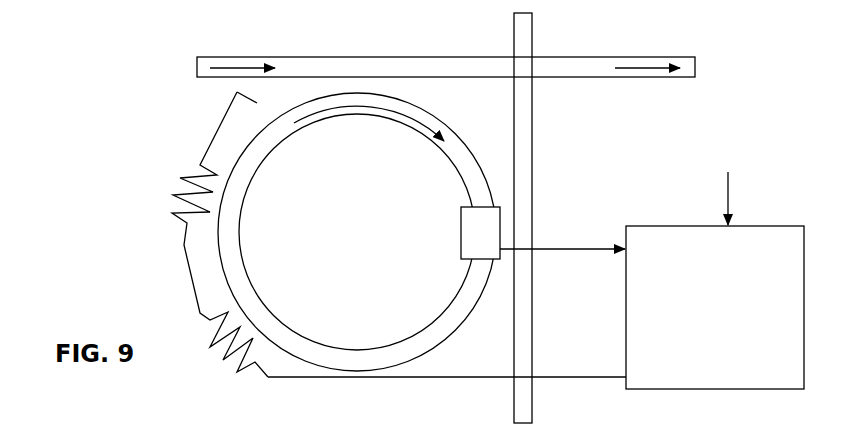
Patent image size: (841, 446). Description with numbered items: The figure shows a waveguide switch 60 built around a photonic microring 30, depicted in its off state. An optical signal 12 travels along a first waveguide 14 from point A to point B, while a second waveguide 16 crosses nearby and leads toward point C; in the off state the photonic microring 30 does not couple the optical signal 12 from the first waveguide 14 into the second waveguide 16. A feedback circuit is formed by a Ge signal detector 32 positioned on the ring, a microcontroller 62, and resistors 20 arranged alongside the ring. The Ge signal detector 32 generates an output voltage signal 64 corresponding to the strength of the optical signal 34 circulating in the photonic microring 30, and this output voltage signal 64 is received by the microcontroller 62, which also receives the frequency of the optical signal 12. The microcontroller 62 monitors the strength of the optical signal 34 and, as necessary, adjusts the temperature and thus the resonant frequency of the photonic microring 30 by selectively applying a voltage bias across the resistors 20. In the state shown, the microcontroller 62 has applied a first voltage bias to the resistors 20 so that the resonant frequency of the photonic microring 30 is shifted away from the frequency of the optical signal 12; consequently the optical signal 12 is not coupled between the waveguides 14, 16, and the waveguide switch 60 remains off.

The waveguide switch 60 is at (98, 130).
The optical signal 12 is at (232, 67).
The first waveguide 14 is at (318, 63).
The second waveguide 16 is at (533, 110).
The resistor 20 is at (181, 313).
The photonic microring 30 is at (470, 150).
The Ge signal detector 32 is at (503, 222).
The optical signal 34 is at (398, 111).
The output voltage signal 64 is at (573, 248).
The microcontroller 62 is at (536, 272).